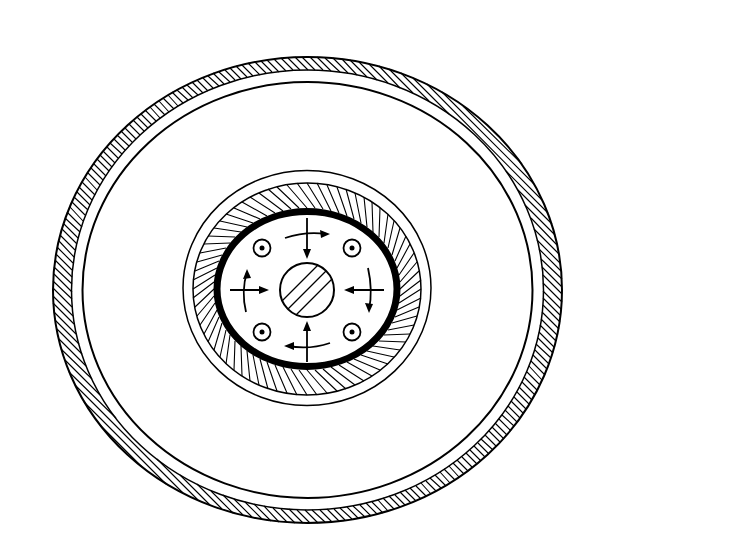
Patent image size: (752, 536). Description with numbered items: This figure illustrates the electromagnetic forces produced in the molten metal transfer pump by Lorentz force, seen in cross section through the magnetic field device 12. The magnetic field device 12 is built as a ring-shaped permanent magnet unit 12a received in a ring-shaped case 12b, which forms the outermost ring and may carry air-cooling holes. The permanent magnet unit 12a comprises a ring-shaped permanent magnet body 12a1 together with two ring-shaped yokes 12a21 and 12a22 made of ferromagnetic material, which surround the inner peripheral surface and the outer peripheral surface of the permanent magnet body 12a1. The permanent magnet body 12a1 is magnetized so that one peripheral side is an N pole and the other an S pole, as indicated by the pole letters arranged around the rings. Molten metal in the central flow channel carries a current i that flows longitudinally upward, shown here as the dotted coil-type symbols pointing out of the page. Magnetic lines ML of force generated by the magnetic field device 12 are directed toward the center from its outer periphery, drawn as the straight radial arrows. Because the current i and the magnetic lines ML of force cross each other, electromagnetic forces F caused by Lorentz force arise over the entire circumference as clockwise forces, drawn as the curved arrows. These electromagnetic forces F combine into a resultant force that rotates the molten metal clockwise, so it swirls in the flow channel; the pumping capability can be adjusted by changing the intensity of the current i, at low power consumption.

The magnetic field device 12 is at (566, 96).
The permanent magnet unit 12a is at (183, 98).
The permanent magnet body 12a1 is at (383, 125).
The yoke 12a21 is at (510, 386).
The yoke 12a22 is at (425, 242).
The case 12b is at (91, 163).
The current i is at (253, 333).
The magnetic lines of force ML is at (293, 358).
The electromagnetic forces F is at (318, 350).